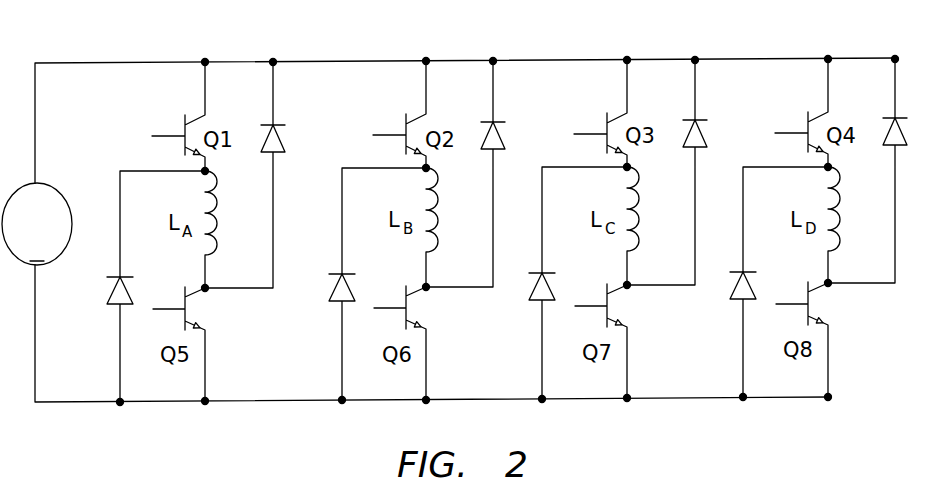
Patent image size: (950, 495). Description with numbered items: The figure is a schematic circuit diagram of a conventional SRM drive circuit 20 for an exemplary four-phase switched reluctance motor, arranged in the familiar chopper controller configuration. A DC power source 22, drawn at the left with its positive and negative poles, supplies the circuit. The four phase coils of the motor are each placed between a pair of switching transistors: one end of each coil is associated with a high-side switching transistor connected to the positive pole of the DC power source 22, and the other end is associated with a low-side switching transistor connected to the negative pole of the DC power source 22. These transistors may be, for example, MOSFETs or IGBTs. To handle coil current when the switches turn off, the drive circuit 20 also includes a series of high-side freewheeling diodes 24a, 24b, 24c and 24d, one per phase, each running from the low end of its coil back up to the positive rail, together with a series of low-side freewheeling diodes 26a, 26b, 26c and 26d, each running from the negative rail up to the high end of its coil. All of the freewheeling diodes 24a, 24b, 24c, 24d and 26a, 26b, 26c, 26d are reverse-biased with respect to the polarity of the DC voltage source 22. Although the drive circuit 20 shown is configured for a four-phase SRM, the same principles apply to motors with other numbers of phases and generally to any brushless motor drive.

The SRM drive circuit 20 is at (138, 41).
The DC power source 22 is at (50, 183).
The high-side freewheeling diode 24a is at (283, 134).
The high-side freewheeling diode 24b is at (505, 130).
The high-side freewheeling diode 24c is at (707, 133).
The high-side freewheeling diode 24d is at (883, 133).
The low-side freewheeling diode 26a is at (112, 306).
The low-side freewheeling diode 26b is at (334, 303).
The low-side freewheeling diode 26c is at (534, 302).
The low-side freewheeling diode 26d is at (735, 301).